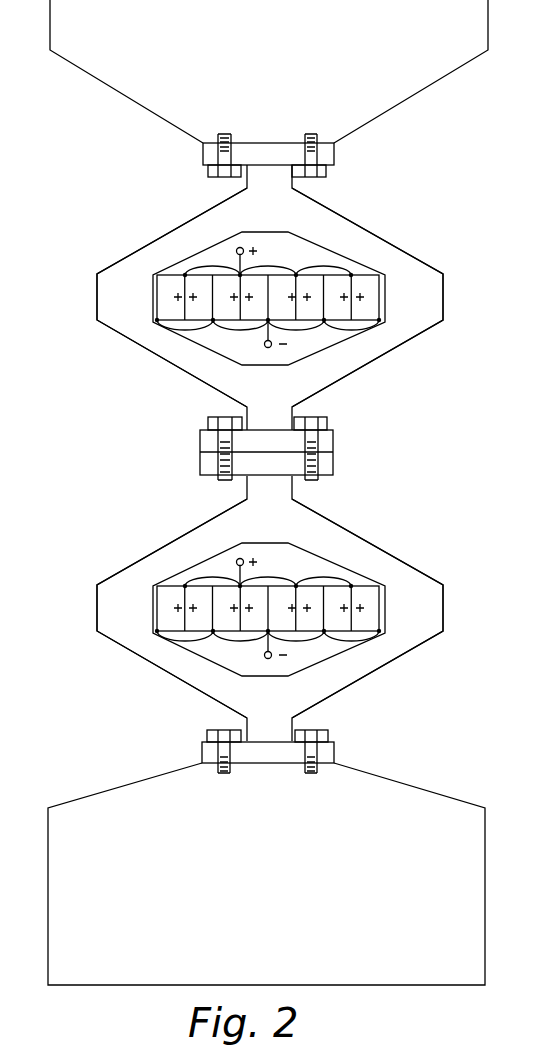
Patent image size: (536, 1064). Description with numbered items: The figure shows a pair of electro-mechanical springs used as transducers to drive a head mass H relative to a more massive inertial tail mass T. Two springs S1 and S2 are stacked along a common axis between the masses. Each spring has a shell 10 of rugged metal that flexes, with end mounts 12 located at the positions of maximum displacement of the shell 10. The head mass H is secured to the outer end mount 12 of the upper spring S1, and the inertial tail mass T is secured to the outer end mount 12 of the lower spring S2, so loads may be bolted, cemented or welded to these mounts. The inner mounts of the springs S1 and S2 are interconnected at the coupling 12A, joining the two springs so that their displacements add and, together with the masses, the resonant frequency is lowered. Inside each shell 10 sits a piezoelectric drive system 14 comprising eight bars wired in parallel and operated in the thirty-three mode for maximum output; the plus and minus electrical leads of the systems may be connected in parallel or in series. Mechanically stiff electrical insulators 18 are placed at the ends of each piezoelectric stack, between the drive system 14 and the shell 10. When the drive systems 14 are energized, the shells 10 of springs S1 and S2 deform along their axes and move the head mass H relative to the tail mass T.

The shell 10 is at (359, 226).
The end mounts 12 is at (277, 150).
The interconnected mounts coupling 12A is at (340, 449).
The piezoelectric drive system 14 is at (304, 261).
The electrical insulators 18 is at (386, 290).
The spring S1 is at (94, 268).
The spring S2 is at (89, 602).
The head mass H is at (282, 63).
The inertial tail mass T is at (277, 854).